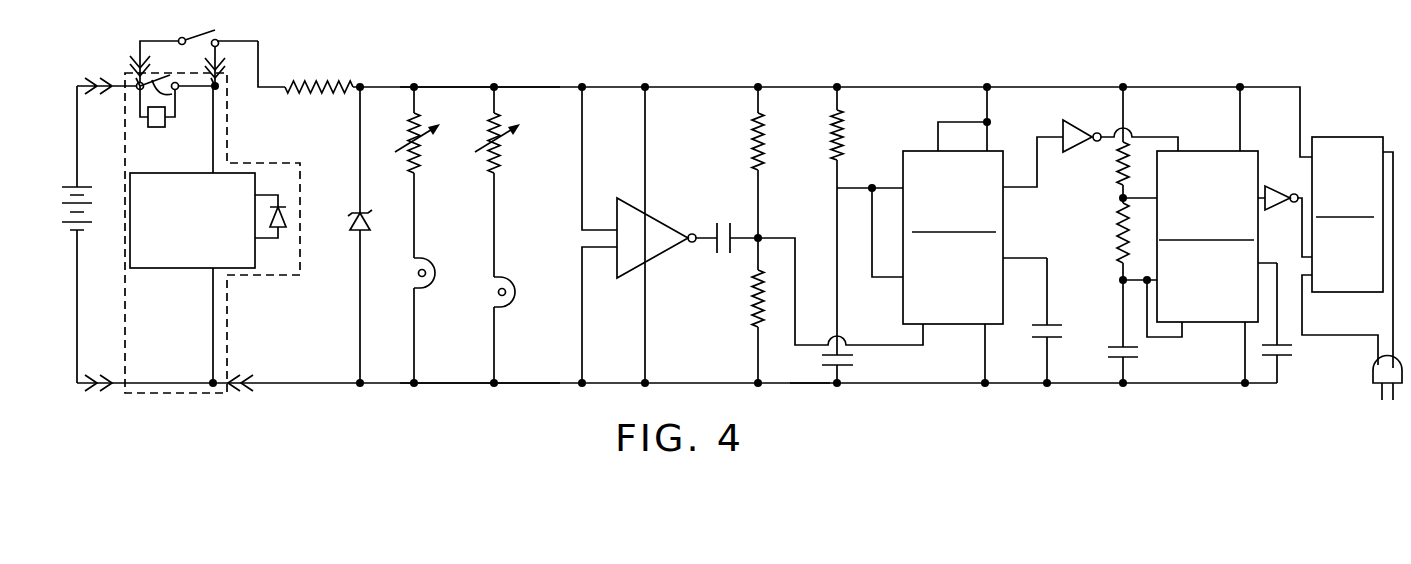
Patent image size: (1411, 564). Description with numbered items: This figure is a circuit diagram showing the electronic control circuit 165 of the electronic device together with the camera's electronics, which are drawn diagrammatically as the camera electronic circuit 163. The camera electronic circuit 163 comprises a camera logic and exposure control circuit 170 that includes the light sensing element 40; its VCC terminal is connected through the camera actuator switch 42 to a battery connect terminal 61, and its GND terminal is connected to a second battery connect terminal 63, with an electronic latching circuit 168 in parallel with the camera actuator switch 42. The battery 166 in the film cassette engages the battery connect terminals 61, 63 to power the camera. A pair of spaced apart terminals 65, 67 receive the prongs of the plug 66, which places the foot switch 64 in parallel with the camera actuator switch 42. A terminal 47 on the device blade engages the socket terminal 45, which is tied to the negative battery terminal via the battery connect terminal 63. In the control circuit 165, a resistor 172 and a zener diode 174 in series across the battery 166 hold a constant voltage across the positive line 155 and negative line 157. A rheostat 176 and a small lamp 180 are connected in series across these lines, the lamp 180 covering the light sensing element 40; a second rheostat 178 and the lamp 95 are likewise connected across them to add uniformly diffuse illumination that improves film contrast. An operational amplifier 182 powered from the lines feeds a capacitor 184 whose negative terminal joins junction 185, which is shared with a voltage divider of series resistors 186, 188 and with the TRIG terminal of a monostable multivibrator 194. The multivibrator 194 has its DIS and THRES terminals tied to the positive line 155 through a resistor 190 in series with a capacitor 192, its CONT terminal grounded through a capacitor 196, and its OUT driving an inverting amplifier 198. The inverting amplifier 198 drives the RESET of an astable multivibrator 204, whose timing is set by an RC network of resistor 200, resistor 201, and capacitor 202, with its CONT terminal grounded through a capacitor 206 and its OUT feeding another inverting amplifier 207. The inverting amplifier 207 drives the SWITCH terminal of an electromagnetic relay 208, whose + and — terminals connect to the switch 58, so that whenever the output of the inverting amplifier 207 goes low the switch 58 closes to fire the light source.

The light sensing element 40 is at (288, 212).
The camera actuator switch 42 is at (172, 88).
The socket terminal 45 is at (242, 377).
The blade terminal 47 is at (250, 388).
The switch 58 is at (1376, 366).
The battery connect terminal 61 is at (110, 88).
The second battery connect terminal 63 is at (112, 378).
The foot switch 64 is at (198, 60).
The terminal 65 is at (132, 78).
The plug 66 is at (134, 58).
The terminal 67 is at (222, 70).
The lamp 95 is at (510, 286).
The positive line 155 is at (455, 86).
The negative line 157 is at (478, 384).
The camera electronic circuit 163 is at (213, 393).
The electronic control circuit 165 is at (794, 390).
The battery 166 is at (80, 185).
The electronic latching circuit 168 is at (165, 122).
The camera logic and exposure control circuit 170 is at (145, 173).
The resistor 172 is at (318, 80).
The zener diode 174 is at (372, 218).
The rheostat 176 is at (410, 124).
The second rheostat 178 is at (502, 154).
The lamp 180 is at (428, 268).
The operational amplifier 182 is at (682, 228).
The capacitor 184 is at (742, 210).
The junction 185 is at (764, 235).
The resistor 186 is at (766, 140).
The resistor 188 is at (752, 302).
The resistor 190 is at (842, 132).
The capacitor 192 is at (848, 368).
The monostable multivibrator 194 is at (906, 164).
The capacitor 196 is at (1050, 324).
The inverting amplifier 198 is at (1080, 127).
The resistor 200 is at (1117, 166).
The resistor 201 is at (1117, 234).
The capacitor 202 is at (1102, 360).
The astable multivibrator 204 is at (1210, 151).
The capacitor 206 is at (1286, 348).
The inverting amplifier 207 is at (1282, 184).
The electromagnetic relay 208 is at (1336, 137).